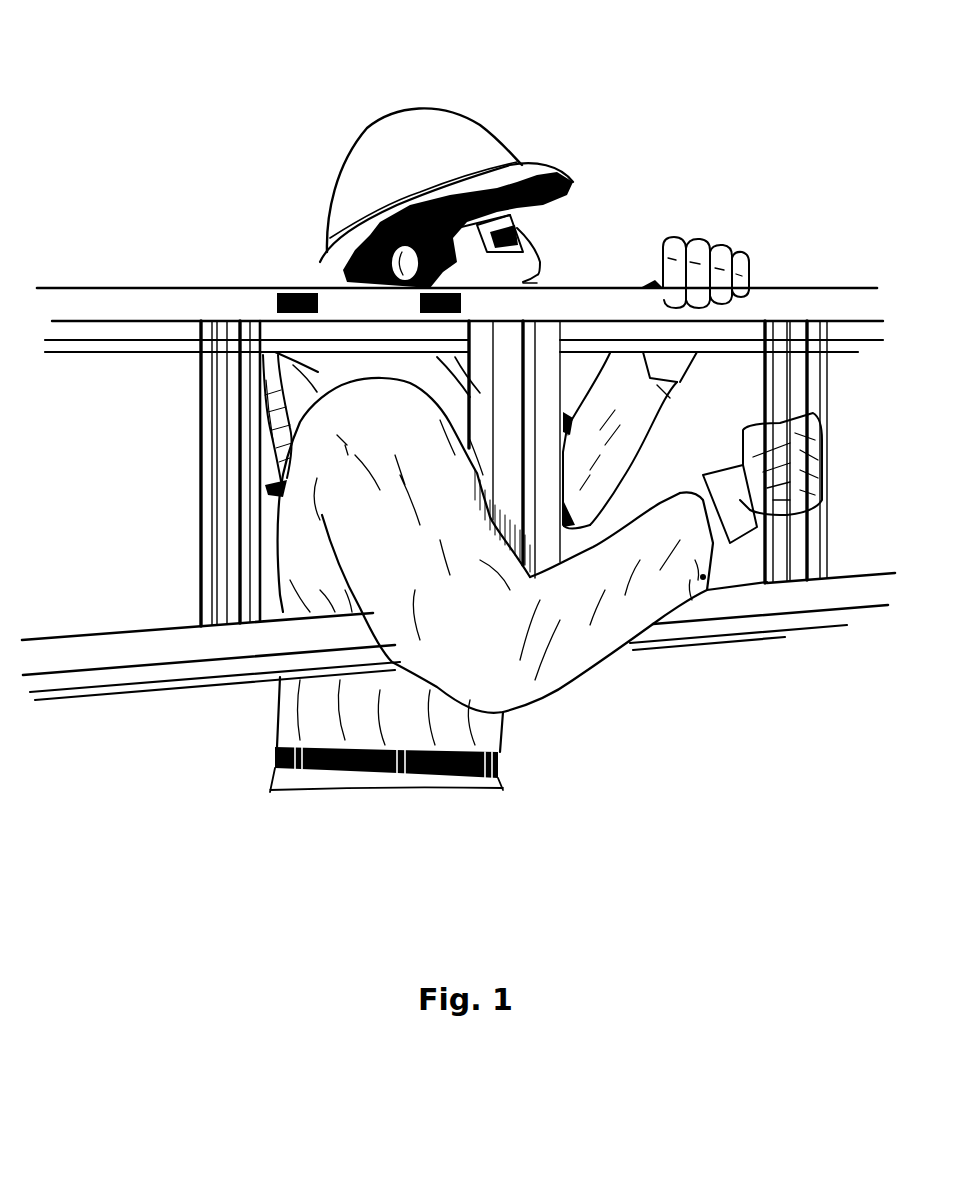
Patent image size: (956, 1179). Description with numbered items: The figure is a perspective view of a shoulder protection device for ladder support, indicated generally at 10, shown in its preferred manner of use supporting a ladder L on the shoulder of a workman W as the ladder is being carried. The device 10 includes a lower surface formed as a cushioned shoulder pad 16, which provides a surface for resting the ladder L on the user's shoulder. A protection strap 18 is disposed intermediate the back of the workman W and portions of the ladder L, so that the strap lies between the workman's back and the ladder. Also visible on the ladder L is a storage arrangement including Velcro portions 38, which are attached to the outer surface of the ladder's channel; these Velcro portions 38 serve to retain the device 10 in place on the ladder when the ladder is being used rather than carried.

The shoulder protection device for ladder support 10 is at (178, 375).
The cushioned shoulder pad 16 is at (317, 370).
The protection strap 18 is at (262, 402).
The Velcro portions 38 is at (303, 292).
The workman W is at (337, 126).
The ladder L is at (570, 302).